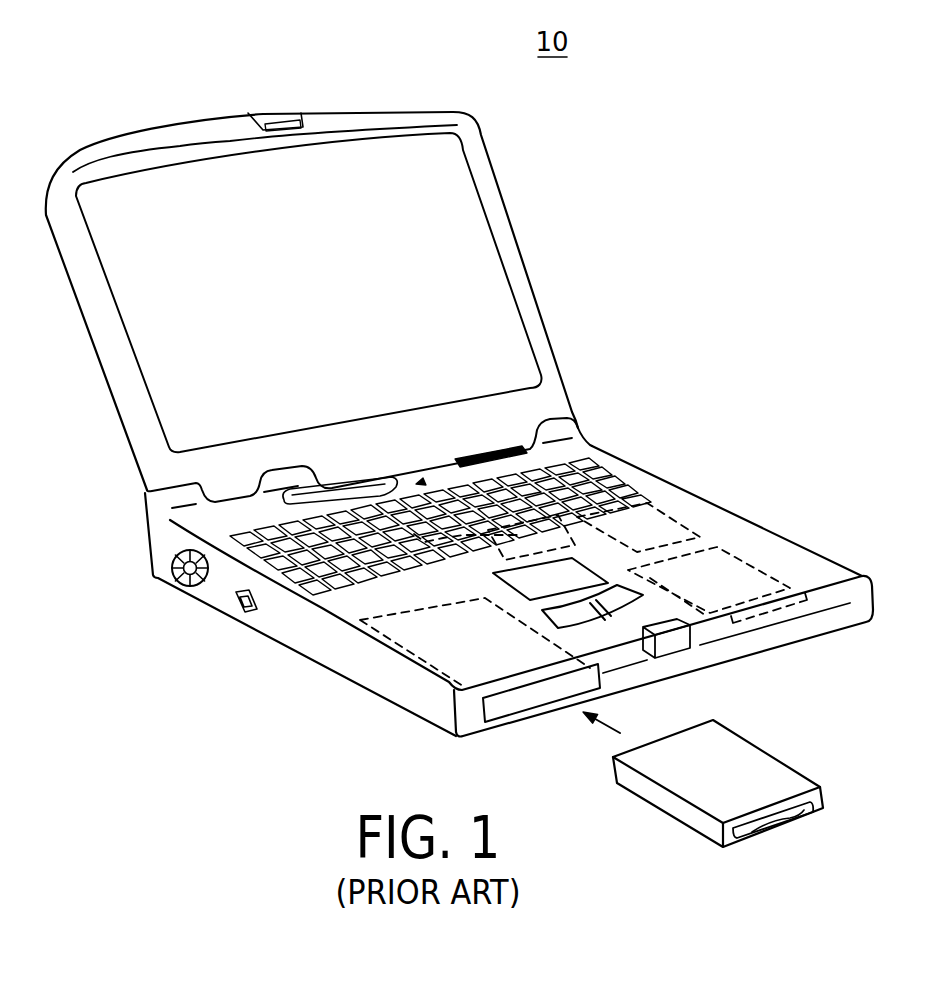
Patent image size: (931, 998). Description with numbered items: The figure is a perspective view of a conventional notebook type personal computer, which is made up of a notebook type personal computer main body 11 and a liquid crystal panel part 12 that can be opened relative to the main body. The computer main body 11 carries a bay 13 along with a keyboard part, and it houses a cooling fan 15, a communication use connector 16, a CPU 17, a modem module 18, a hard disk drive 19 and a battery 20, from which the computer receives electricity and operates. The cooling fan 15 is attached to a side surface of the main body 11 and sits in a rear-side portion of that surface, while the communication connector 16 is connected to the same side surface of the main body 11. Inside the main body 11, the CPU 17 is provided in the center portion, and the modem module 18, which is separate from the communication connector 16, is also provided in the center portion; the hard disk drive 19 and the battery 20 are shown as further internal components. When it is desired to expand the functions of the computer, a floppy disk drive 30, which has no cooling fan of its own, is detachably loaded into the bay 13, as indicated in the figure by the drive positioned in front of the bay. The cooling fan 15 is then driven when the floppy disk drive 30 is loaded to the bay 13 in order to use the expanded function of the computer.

The notebook type personal computer main body 11 is at (762, 473).
The liquid crystal panel part 12 is at (535, 216).
The bay 13 is at (512, 706).
The cooling fan 15 is at (170, 571).
The communication use connector 16 is at (243, 607).
The CPU 17 is at (592, 458).
The modem module 18 is at (445, 545).
The hard disk drive 19 is at (745, 560).
The battery 20 is at (663, 522).
The floppy disk drive 30 is at (765, 749).